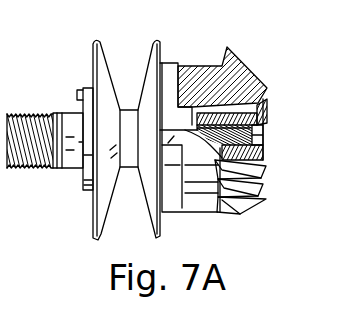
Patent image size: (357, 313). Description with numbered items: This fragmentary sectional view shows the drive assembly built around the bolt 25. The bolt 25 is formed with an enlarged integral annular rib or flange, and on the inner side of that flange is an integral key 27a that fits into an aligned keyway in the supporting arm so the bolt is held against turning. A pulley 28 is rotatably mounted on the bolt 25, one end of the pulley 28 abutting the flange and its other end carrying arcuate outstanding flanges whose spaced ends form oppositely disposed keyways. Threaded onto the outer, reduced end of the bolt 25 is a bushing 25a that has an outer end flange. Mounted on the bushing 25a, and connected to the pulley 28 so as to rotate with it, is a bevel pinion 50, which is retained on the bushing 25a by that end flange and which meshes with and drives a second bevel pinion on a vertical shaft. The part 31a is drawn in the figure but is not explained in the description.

The threaded shaft 25 is at (72, 165).
The bevel gear 25a is at (268, 118).
The nut 27a is at (77, 92).
The pulley flange 28 is at (93, 47).
The bearing housing 31a is at (167, 137).
The gear teeth 50 is at (273, 174).